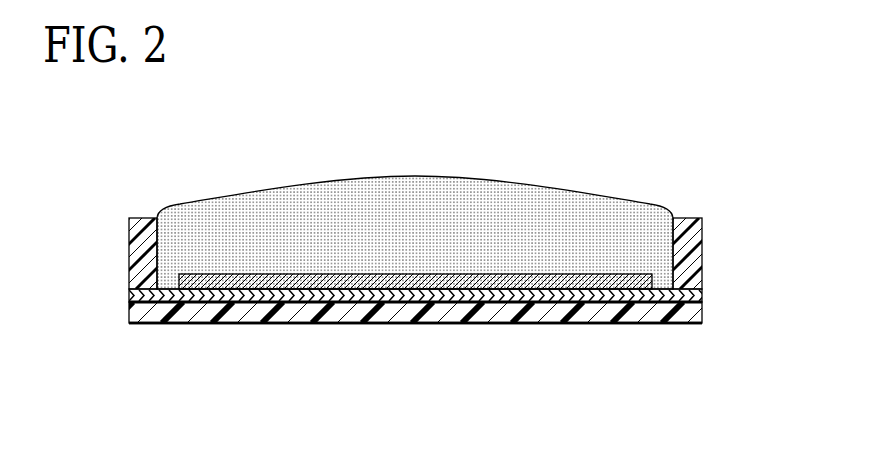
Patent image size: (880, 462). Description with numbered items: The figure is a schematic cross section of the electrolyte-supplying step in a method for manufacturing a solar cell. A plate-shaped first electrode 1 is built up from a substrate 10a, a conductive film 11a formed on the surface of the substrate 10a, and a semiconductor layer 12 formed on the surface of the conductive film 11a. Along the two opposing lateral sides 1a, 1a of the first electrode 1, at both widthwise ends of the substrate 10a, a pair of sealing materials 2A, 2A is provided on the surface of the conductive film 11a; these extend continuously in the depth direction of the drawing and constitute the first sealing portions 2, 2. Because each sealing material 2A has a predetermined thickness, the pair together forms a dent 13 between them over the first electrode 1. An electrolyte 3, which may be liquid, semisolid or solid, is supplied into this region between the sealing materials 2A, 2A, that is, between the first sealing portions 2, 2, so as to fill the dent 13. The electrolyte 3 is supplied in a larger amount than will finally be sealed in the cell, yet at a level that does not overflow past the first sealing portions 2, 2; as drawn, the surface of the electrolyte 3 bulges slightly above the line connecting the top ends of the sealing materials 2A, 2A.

The first electrode 1 is at (414, 273).
The lateral side 1a is at (130, 310).
The substrate 10a is at (307, 324).
The conductive film 11a is at (333, 296).
The semiconductor layer 12 is at (478, 282).
The dent 13 is at (661, 287).
The sealing material 2A is at (130, 258).
The first sealing portion 2 is at (414, 241).
The electrolyte 3 is at (413, 195).